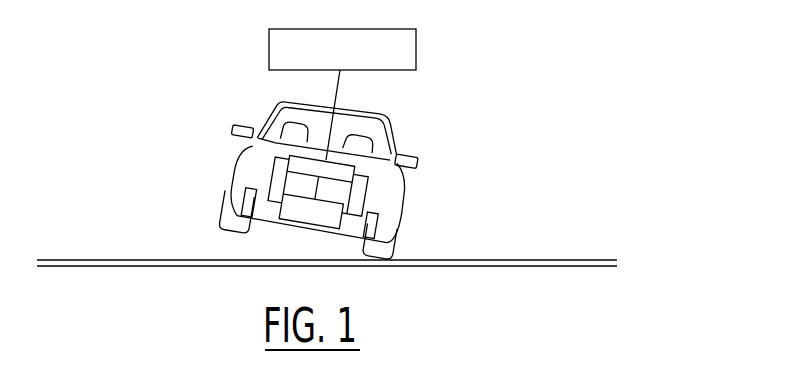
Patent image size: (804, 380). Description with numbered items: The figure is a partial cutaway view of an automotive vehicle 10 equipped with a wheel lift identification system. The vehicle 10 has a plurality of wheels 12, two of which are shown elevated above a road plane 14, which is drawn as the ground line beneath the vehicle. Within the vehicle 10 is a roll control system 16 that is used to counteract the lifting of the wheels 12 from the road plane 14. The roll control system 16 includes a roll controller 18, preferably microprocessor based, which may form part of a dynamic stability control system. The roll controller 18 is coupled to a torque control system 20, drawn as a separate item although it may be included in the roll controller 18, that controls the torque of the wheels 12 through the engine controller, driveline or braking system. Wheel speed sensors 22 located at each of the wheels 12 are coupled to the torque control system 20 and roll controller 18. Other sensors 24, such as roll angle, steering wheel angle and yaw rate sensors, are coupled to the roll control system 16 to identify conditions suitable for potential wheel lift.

The automotive vehicle 10 is at (381, 119).
The wheels 12 is at (229, 214).
The road plane 14 is at (67, 259).
The roll control system 16 is at (418, 175).
The roll controller 18 is at (295, 219).
The torque control system 20 is at (332, 158).
The wheel speed sensors 22 is at (242, 184).
The other sensors 24 is at (417, 54).